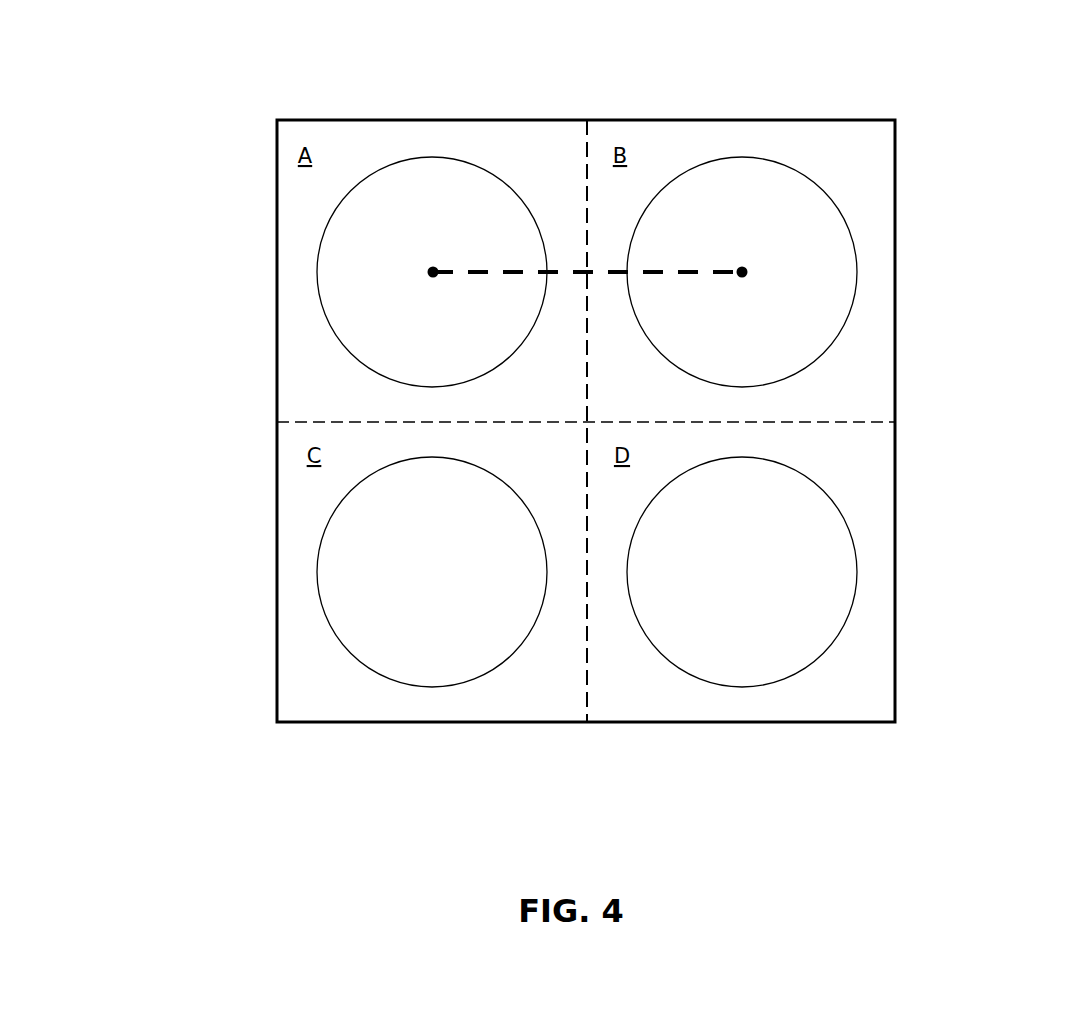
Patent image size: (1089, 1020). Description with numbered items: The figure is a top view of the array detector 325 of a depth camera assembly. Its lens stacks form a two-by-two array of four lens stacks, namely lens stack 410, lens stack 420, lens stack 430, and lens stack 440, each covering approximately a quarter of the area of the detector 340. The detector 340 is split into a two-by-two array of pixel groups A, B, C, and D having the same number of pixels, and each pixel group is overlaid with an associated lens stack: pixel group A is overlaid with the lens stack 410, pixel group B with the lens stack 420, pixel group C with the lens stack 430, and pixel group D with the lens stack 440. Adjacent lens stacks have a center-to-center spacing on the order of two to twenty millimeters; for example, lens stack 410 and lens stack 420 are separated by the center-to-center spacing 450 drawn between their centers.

The array detector 325 is at (466, 363).
The detector 340 is at (303, 683).
The lens stack 410 is at (320, 240).
The lens stack 420 is at (857, 272).
The lens stack 430 is at (318, 572).
The lens stack 440 is at (857, 572).
The center-to-center spacing 450 is at (665, 270).